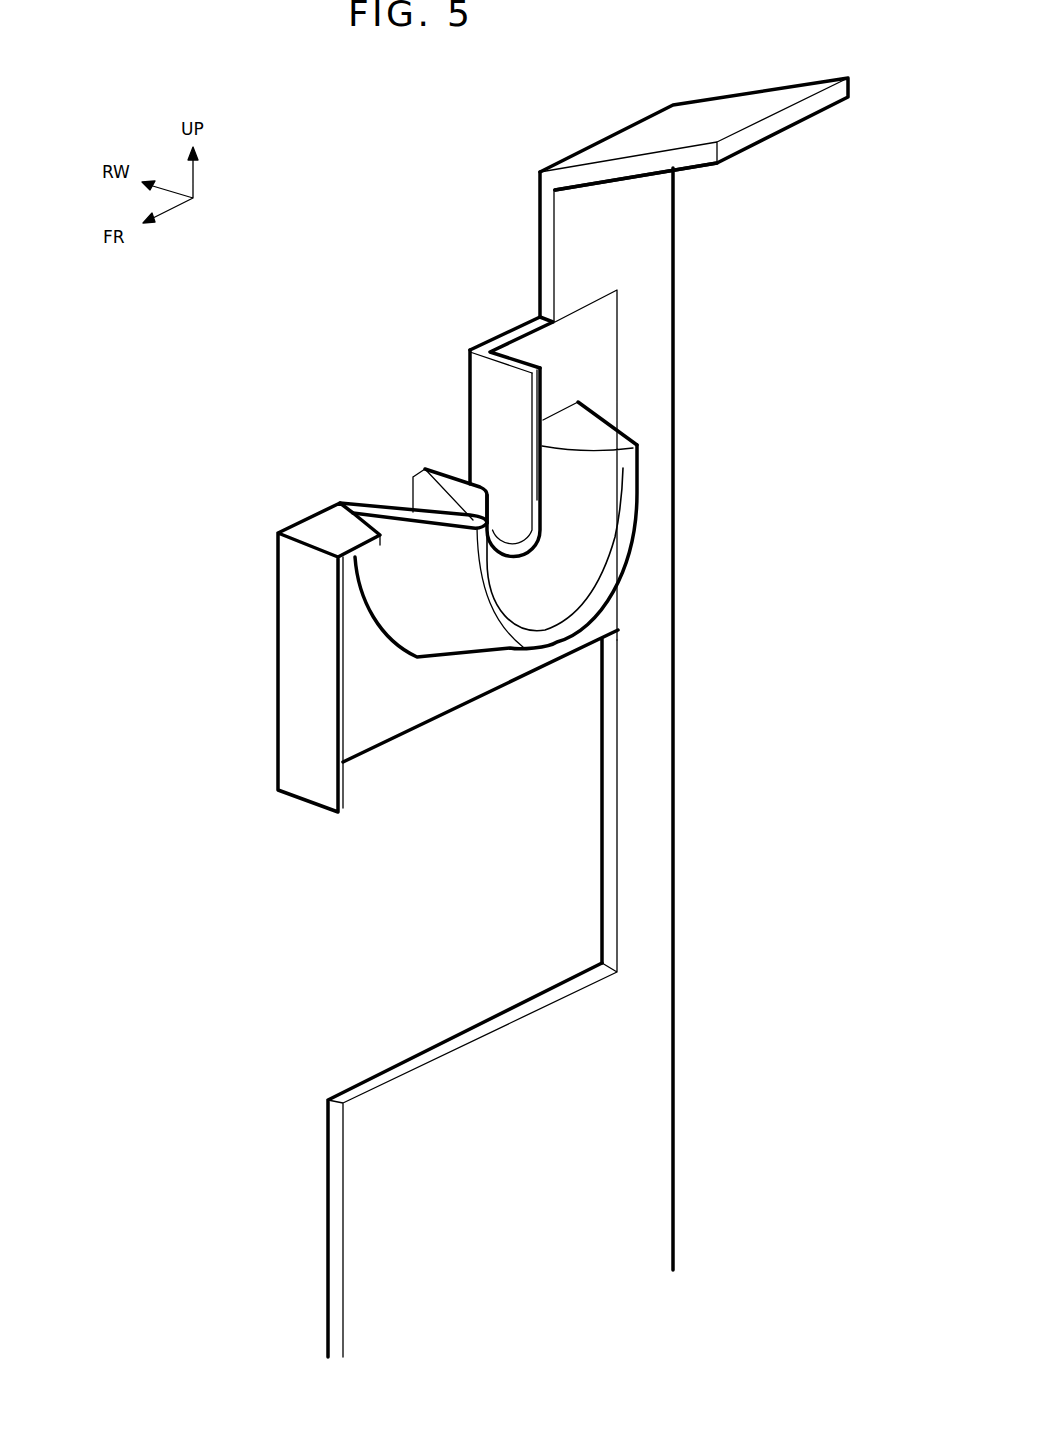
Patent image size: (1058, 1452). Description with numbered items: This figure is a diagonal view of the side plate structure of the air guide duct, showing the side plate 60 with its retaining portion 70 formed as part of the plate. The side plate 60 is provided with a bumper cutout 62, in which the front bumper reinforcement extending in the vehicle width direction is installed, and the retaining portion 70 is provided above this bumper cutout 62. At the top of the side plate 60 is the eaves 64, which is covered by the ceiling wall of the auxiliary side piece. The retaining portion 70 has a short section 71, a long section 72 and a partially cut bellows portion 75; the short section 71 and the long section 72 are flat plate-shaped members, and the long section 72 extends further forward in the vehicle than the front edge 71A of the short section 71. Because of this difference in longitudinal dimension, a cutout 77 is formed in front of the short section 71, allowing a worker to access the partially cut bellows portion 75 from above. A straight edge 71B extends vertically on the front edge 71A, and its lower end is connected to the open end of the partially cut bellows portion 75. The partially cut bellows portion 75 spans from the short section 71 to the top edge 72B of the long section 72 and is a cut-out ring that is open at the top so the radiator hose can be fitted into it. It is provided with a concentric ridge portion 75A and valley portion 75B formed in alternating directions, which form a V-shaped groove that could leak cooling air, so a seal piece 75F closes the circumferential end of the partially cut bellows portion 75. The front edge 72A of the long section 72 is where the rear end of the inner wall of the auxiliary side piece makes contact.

The side plate 60 is at (678, 876).
The bumper cutout 62 is at (377, 951).
The eaves 64 is at (790, 118).
The retaining portion 70 is at (490, 626).
The short section 71 is at (456, 381).
The front edge 71A is at (468, 362).
The straight edge 71B is at (468, 432).
The long section 72 is at (407, 721).
The front edge 72A is at (276, 630).
The top edge 72B is at (298, 512).
The partially cut bellows portion 75 is at (522, 531).
The ridge portion 75A is at (632, 494).
The valley portion 75B is at (413, 476).
The seal piece 75F is at (583, 427).
The cutout 77 is at (315, 352).